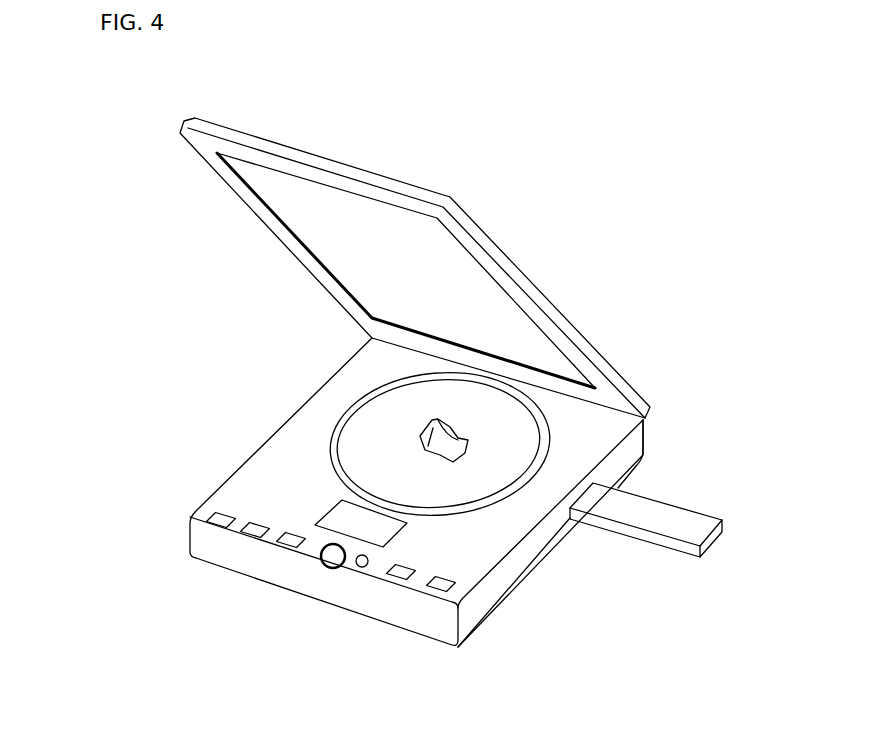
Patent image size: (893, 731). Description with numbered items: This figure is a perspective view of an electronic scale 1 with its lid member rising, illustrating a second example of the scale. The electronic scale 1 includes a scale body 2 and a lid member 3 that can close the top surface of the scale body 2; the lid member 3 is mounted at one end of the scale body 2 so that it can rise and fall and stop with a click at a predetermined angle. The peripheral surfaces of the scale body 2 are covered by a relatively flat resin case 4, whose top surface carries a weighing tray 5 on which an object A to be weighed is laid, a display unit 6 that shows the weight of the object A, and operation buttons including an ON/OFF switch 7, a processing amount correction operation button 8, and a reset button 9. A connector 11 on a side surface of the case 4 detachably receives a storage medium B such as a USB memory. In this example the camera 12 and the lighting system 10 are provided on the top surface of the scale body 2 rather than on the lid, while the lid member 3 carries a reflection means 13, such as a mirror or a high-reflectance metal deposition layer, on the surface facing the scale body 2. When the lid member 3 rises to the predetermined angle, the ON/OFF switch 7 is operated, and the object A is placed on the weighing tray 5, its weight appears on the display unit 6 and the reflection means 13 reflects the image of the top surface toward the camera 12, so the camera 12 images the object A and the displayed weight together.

The electronic scale 1 is at (662, 344).
The scale body 2 is at (240, 453).
The lid member 3 is at (561, 293).
The case 4 is at (626, 453).
The weighing tray 5 is at (355, 442).
The display unit 6 is at (318, 516).
The ON/OFF switch 7 is at (207, 520).
The processing amount correction operation button 8 is at (397, 577).
The reset button 9 is at (248, 532).
The lighting system 10 is at (357, 565).
The connector 11 is at (568, 518).
The camera 12 is at (320, 563).
The reflection means 13 is at (393, 228).
The object to be weighed A is at (423, 423).
The storage medium B is at (638, 523).